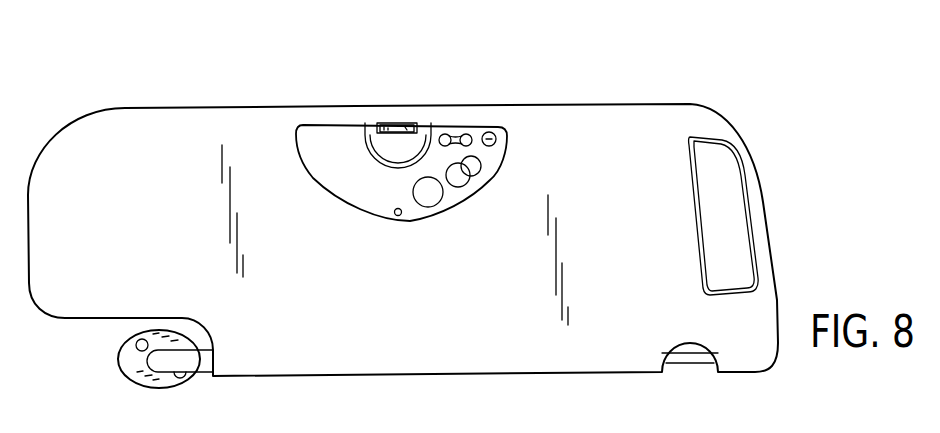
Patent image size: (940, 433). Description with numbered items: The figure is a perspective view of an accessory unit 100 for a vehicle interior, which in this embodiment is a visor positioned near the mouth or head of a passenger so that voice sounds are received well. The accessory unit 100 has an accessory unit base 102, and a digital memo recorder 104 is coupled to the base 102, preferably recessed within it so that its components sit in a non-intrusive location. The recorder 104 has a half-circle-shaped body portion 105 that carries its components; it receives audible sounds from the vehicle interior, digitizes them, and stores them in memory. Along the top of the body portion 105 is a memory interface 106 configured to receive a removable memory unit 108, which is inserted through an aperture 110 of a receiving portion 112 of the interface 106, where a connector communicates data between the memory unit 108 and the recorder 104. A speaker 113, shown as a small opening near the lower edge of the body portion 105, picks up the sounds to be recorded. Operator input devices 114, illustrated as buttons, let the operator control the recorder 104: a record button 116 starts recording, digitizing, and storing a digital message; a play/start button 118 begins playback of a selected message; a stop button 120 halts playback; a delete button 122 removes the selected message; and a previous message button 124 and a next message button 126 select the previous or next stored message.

The accessory unit 100 is at (715, 83).
The accessory unit base 102 is at (618, 303).
The digital memo recorder 104 is at (478, 92).
The half-circle-shaped body portion 105 is at (327, 143).
The memory interface 106 is at (441, 136).
The removable memory unit 108 is at (402, 123).
The aperture 110 is at (424, 135).
The receiving portion 112 is at (390, 145).
The speaker 113 is at (394, 215).
The operator input devices 114 is at (517, 130).
The record button 116 is at (430, 200).
The play/start button 118 is at (461, 186).
The stop button 120 is at (478, 172).
The delete button 122 is at (494, 143).
The previous message button 124 is at (457, 137).
The next message button 126 is at (469, 134).